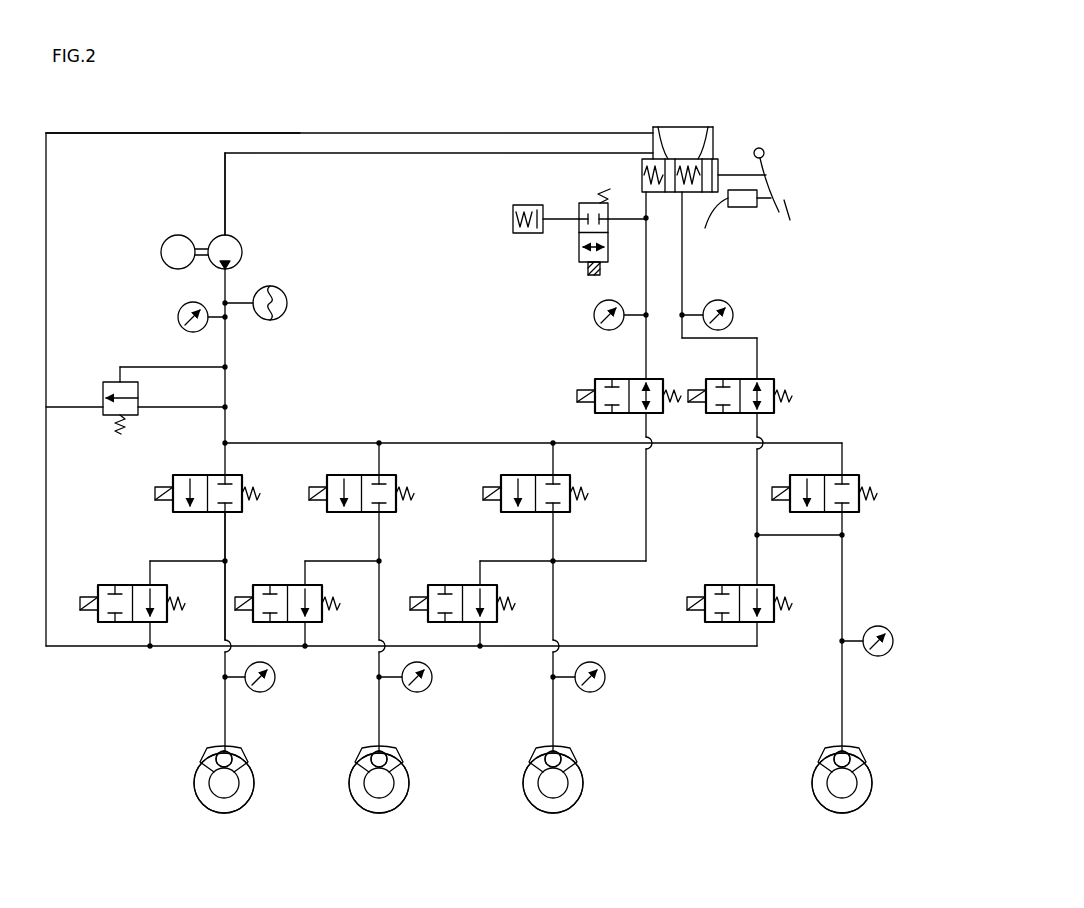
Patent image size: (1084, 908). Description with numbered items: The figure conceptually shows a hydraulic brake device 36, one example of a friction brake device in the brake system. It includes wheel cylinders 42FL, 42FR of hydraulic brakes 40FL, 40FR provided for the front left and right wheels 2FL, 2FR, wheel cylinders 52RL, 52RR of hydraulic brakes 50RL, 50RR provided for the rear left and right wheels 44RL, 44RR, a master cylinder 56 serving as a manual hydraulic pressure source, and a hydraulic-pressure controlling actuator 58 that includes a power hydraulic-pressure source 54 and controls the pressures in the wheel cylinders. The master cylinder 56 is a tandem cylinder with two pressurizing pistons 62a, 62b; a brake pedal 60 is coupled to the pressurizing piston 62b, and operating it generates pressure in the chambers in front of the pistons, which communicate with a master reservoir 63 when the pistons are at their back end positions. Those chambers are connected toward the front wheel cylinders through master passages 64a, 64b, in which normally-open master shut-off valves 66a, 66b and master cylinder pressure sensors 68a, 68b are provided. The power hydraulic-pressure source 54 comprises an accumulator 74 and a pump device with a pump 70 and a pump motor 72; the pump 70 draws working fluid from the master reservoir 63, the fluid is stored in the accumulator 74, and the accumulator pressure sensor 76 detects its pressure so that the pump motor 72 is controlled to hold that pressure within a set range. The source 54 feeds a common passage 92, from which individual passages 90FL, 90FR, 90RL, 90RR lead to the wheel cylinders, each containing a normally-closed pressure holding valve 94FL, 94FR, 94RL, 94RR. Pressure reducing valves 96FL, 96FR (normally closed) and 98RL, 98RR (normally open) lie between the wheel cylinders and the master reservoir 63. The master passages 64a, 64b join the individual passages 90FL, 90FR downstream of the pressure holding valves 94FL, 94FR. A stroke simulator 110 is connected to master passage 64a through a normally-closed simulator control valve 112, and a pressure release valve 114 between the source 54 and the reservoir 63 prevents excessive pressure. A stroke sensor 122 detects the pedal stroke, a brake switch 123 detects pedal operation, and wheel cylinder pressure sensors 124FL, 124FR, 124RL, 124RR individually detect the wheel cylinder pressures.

The hydraulic brake device 36 is at (364, 128).
The power hydraulic-pressure source 54 is at (204, 218).
The master cylinder 56 is at (721, 154).
The hydraulic-pressure controlling actuator 58 is at (830, 405).
The brake pedal 60 is at (760, 197).
The pressurizing piston 62a is at (664, 140).
The pressurizing piston 62b is at (708, 130).
The master reservoir 63 is at (678, 130).
The master passage 64a is at (647, 355).
The master passage 64b is at (683, 270).
The master shut-off valve 66a is at (598, 382).
The master shut-off valve 66b is at (766, 382).
The master cylinder pressure sensor 68a is at (594, 315).
The master cylinder pressure sensor 68b is at (733, 316).
The pump 70 is at (229, 241).
The pump motor 72 is at (171, 242).
The accumulator 74 is at (277, 291).
The accumulator pressure sensor 76 is at (178, 320).
The common passage 92 is at (316, 442).
The pressure holding valve 94RL is at (182, 480).
The pressure holding valve 94RR is at (392, 510).
The pressure holding valve 94FL is at (546, 480).
The pressure holding valve 94FR is at (832, 478).
The individual passage 90RL is at (224, 546).
The individual passage 90RR is at (378, 545).
The individual passage 90FL is at (554, 596).
The individual passage 90FR is at (844, 550).
The pressure reducing valve 98RL is at (122, 588).
The pressure reducing valve 98RR is at (294, 588).
The pressure reducing valve 96FL is at (464, 588).
The pressure reducing valve 96FR is at (712, 592).
The stroke simulator 110 is at (513, 212).
The simulator control valve 112 is at (580, 210).
The pressure release valve 114 is at (104, 384).
The stroke sensor 122 is at (765, 152).
The brake switch 123 is at (706, 224).
The wheel cylinder pressure sensor 124RL is at (274, 673).
The wheel cylinder pressure sensor 124RR is at (431, 673).
The wheel cylinder pressure sensor 124FL is at (604, 673).
The wheel cylinder pressure sensor 124FR is at (892, 637).
The hydraulic brake 50RL is at (235, 747).
The hydraulic brake 50RR is at (391, 747).
The hydraulic brake 40FL is at (566, 747).
The hydraulic brake 40FR is at (856, 747).
The wheel cylinder 52RL is at (218, 753).
The wheel cylinder 52RR is at (373, 753).
The wheel cylinder 42FL is at (547, 753).
The wheel cylinder 42FR is at (836, 753).
The rear left wheel 44RL is at (248, 809).
The rear right wheel 44RR is at (404, 809).
The front left wheel 2FL is at (578, 809).
The front right wheel 2FR is at (816, 809).